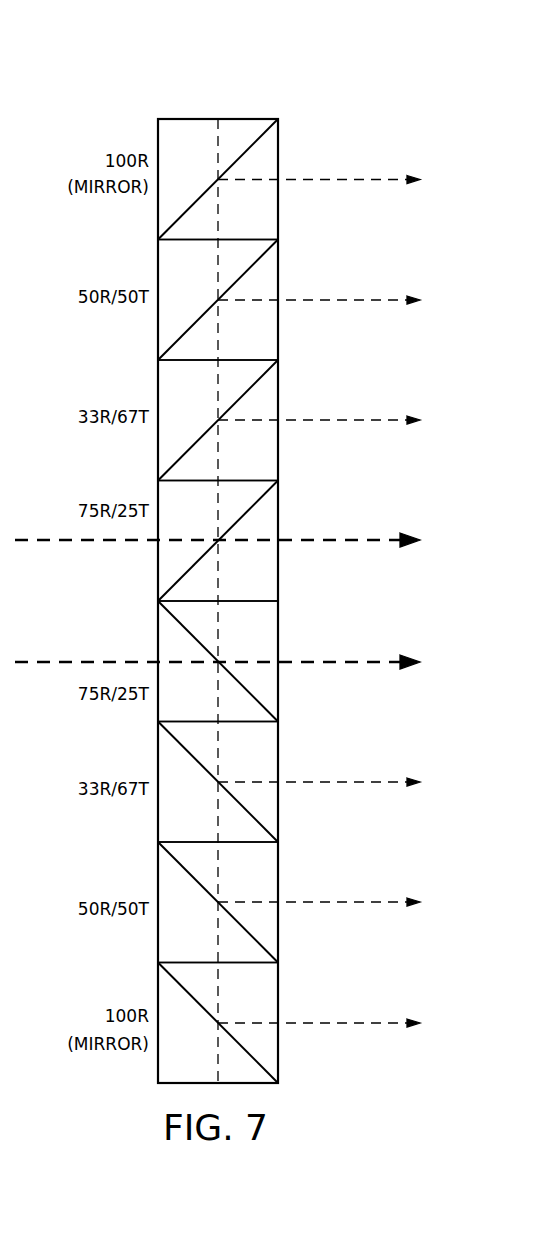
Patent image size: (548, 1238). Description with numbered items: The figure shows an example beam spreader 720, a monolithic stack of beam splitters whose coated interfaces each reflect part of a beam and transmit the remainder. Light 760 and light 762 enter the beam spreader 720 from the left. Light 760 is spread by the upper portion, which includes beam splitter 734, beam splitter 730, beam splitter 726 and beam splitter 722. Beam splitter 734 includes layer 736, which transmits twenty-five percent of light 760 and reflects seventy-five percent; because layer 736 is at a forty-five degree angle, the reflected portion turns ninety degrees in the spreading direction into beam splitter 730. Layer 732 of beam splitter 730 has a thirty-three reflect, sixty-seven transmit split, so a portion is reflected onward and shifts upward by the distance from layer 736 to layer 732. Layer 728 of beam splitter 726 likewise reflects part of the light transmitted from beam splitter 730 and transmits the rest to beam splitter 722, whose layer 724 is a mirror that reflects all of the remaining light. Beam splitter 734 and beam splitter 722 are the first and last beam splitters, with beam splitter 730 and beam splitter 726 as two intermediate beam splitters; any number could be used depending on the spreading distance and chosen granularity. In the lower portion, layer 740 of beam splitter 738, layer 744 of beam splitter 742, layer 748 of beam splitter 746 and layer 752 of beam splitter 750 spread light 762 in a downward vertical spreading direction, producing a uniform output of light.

The beam spreader 720 is at (246, 84).
The beam splitter 722 is at (276, 150).
The layer 724 is at (183, 207).
The beam splitter 726 is at (276, 270).
The layer 728 is at (183, 328).
The beam splitter 730 is at (276, 390).
The layer 732 is at (183, 448).
The beam splitter 734 is at (272, 510).
The layer 736 is at (207, 551).
The beam splitter 738 is at (272, 692).
The layer 740 is at (207, 651).
The beam splitter 742 is at (272, 813).
The layer 744 is at (183, 757).
The beam splitter 746 is at (272, 933).
The layer 748 is at (183, 877).
The beam splitter 750 is at (272, 1053).
The layer 752 is at (183, 997).
The light 760 is at (50, 540).
The light 762 is at (50, 662).